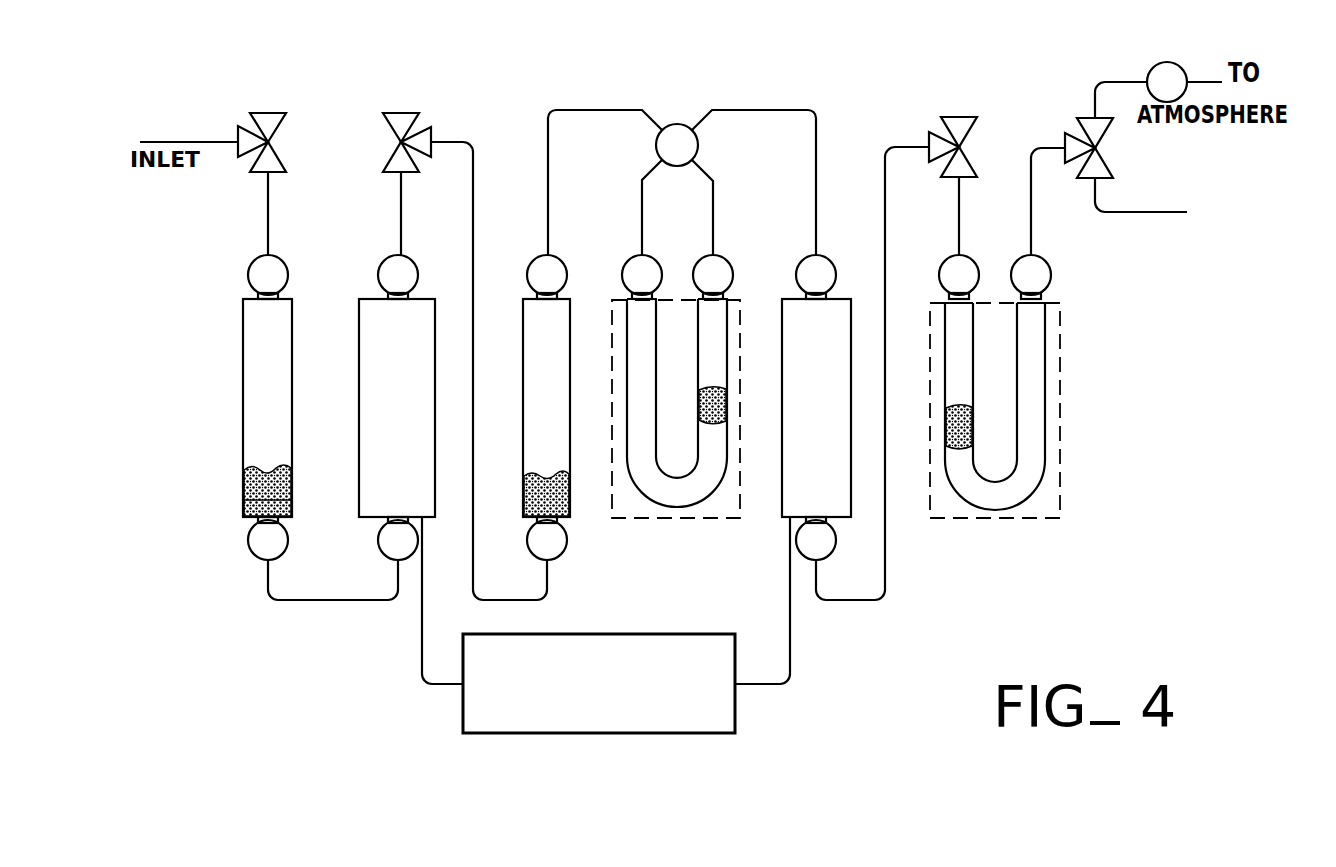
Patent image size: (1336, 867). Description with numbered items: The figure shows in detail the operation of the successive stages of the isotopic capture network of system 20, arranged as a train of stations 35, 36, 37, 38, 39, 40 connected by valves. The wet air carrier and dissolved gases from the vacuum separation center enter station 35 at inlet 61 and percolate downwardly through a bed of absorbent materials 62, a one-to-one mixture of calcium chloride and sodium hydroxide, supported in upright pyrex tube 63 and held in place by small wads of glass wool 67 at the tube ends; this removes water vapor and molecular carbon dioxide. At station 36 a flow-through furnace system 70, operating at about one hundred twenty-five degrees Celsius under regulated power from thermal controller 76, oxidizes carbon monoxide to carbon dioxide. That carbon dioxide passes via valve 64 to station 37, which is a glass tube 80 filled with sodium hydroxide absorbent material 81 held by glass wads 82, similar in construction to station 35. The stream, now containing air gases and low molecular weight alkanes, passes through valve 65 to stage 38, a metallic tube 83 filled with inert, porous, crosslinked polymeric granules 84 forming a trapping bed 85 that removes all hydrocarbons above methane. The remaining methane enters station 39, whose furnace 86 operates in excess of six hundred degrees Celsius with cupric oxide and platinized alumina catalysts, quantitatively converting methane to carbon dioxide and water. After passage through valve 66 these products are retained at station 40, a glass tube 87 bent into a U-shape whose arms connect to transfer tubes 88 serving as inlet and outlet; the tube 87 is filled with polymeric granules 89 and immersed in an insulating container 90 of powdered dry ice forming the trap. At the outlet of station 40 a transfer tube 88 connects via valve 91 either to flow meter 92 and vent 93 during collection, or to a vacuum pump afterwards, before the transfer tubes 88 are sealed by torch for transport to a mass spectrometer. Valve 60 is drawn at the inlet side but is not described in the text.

The system 20 is at (345, 110).
The station 35 is at (244, 396).
The station 36 is at (390, 399).
The station 37 is at (547, 407).
The stage 38 is at (695, 352).
The station 39 is at (809, 391).
The station 40 is at (1036, 361).
The inlet valve 60 is at (263, 111).
The inlet 61 is at (283, 263).
The absorbent materials 62 is at (292, 488).
The upright tube 63 is at (243, 367).
The valve 64 is at (408, 113).
The valve 65 is at (698, 146).
The valve 66 is at (960, 114).
The glass wool 67 is at (292, 510).
The flow-through furnace system 70 is at (360, 335).
The thermal controller 76 is at (735, 710).
The glass tube 80 is at (568, 298).
The absorbent material 81 is at (565, 487).
The glass wads 82 is at (562, 515).
The metallic tube 83 is at (728, 324).
The polymeric granules 84 is at (702, 404).
The trapping bed 85 is at (741, 351).
The furnace 86 is at (781, 498).
The glass tube 87 is at (1047, 357).
The transfer tubes 88 is at (958, 234).
The polymeric granules 89 is at (967, 427).
The insulating container 90 is at (1060, 453).
The valve 91 is at (1108, 158).
The flow meter 92 is at (1148, 73).
The vent 93 is at (1205, 84).